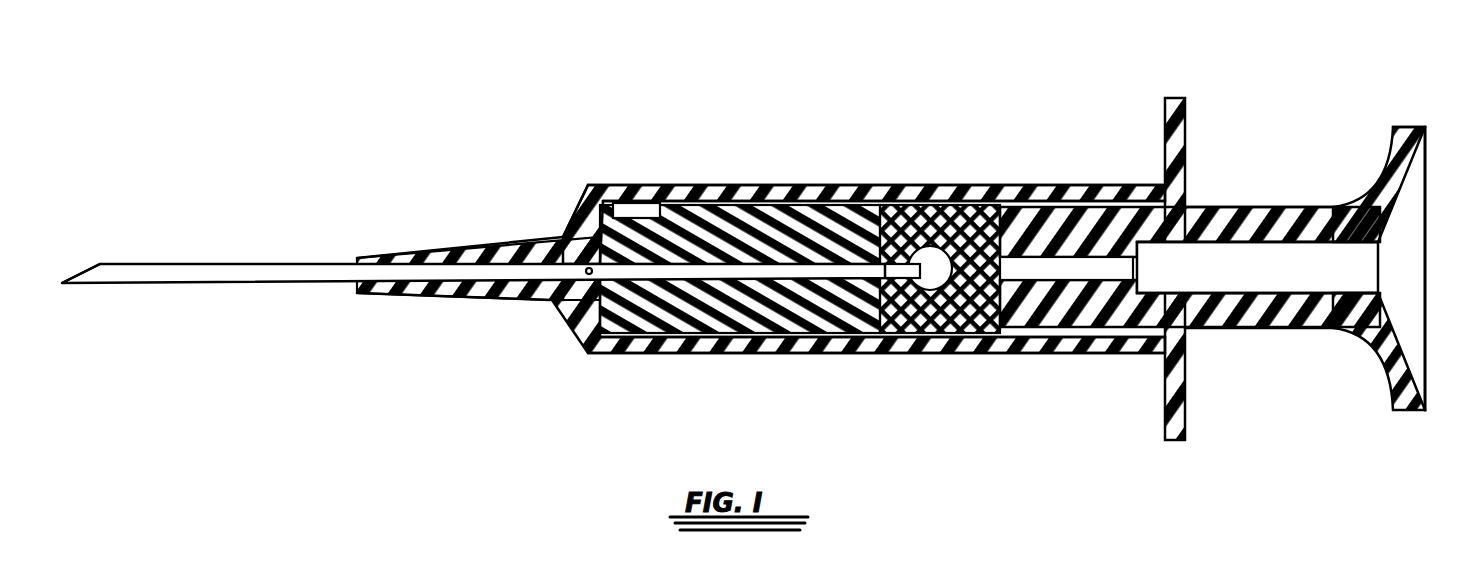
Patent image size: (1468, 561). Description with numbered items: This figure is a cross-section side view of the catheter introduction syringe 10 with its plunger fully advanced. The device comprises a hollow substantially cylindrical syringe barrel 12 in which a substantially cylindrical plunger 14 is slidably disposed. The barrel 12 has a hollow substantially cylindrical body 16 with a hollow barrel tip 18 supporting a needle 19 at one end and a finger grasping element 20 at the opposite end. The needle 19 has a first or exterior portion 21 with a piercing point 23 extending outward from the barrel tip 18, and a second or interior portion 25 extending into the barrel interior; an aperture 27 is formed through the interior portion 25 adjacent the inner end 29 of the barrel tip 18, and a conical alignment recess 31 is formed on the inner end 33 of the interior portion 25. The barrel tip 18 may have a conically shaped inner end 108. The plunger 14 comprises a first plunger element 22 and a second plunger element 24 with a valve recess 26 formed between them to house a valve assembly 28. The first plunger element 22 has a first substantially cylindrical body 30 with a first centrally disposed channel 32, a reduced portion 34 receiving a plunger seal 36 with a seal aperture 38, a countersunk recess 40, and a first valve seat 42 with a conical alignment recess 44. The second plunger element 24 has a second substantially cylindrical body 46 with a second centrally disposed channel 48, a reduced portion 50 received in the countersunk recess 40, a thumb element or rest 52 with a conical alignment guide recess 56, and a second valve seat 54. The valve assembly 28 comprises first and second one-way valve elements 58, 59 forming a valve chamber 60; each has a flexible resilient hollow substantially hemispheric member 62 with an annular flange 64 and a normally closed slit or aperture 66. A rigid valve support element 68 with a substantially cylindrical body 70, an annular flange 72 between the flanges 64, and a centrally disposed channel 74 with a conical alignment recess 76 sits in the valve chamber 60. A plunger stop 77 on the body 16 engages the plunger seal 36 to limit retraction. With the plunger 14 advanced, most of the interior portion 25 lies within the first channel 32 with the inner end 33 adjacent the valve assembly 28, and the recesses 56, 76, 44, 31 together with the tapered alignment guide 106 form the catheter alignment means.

The catheter introduction syringe 10 is at (760, 172).
The hollow substantially cylindrical syringe barrel 12 is at (1122, 168).
The substantially cylindrical plunger 14 is at (1323, 186).
The hollow substantially cylindrical body 16 is at (785, 262).
The hollow barrel tip 18 is at (452, 248).
The needle 19 is at (477, 236).
The finger grasping element 20 is at (1180, 98).
The first or exterior portion 21 is at (247, 283).
The first plunger element 22 is at (742, 200).
The piercing point 23 is at (100, 275).
The second plunger element 24 is at (1205, 190).
The second or interior portion 25 is at (650, 350).
The valve recess 26 is at (920, 250).
The aperture 27 is at (517, 297).
The valve assembly 28 is at (993, 280).
The inner end 29 is at (563, 238).
The first substantially cylindrical body 30 is at (720, 300).
The conical alignment recess 31 is at (790, 340).
The first centrally disposed channel 32 is at (767, 270).
The inner end 33 is at (830, 268).
The reduced portion 34 is at (657, 215).
The plunger seal 36 is at (583, 212).
The seal aperture 38 is at (563, 300).
The countersunk recess 40 is at (967, 330).
The first valve seat 42 is at (875, 320).
The conical alignment recess 44 is at (870, 300).
The second substantially cylindrical body 46 is at (1275, 315).
The second centrally disposed channel 48 is at (1317, 272).
The reduced portion 50 is at (1023, 335).
The thumb element or rest 52 is at (1413, 127).
The second valve seat 54 is at (1007, 260).
The conical alignment guide recess 56 is at (1406, 231).
The first one-way valve element 58 is at (953, 285).
The second one-way valve element 59 is at (983, 320).
The valve chamber 60 is at (942, 270).
The flexible resilient hollow substantially hemispheric member 62 is at (890, 240).
The annular flange 64 is at (937, 300).
The slit or aperture 66 is at (862, 225).
The rigid valve support element 68 is at (953, 320).
The substantially cylindrical body 70 is at (967, 290).
The annular flange 72 is at (947, 310).
The centrally disposed channel 74 is at (960, 290).
The conical alignment recess 76 is at (1027, 240).
The plunger stop 77 is at (940, 280).
The tapered alignment guide 106 is at (1142, 272).
The conically shaped inner end 108 is at (570, 323).